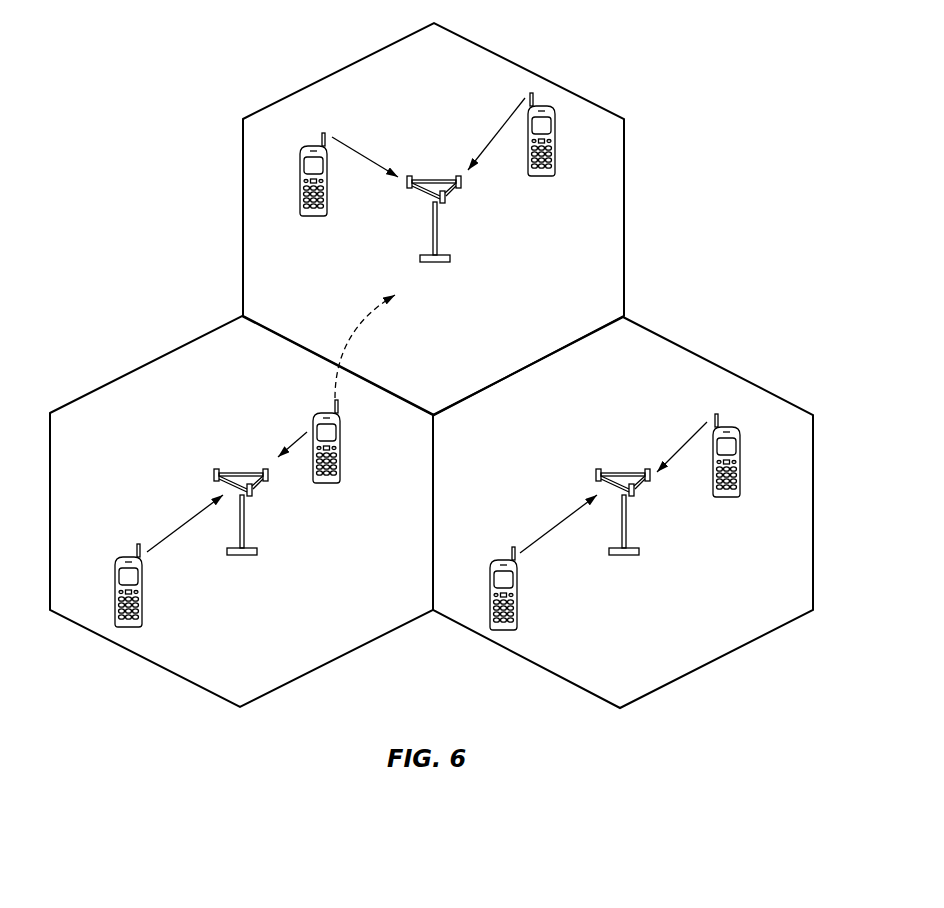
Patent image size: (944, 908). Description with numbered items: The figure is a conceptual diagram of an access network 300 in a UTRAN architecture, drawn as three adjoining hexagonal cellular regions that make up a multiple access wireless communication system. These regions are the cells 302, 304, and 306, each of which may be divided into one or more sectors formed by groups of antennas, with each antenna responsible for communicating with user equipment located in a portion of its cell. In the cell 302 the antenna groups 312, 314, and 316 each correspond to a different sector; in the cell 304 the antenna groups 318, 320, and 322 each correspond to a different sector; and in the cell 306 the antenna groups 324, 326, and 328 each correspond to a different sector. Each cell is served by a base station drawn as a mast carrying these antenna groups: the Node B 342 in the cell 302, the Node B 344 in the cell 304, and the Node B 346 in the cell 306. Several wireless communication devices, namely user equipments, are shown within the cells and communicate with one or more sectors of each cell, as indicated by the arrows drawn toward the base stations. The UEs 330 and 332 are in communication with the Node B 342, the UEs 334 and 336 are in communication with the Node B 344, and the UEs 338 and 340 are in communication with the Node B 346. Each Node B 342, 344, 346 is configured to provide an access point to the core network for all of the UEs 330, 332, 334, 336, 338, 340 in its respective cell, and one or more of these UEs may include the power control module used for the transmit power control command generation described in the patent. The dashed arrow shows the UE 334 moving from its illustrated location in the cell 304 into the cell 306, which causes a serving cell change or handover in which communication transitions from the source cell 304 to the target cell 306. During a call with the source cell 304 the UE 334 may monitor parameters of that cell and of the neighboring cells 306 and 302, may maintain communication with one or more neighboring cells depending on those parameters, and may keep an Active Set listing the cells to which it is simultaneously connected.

The access network 300 is at (731, 52).
The cell 302 is at (717, 363).
The cell 304 is at (125, 375).
The cell 306 is at (512, 64).
The antenna group 312 is at (571, 463).
The antenna group 314 is at (658, 505).
The antenna group 316 is at (673, 486).
The antenna group 318 is at (277, 506).
The antenna group 320 is at (292, 486).
The antenna group 322 is at (190, 462).
The antenna group 324 is at (382, 196).
The antenna group 326 is at (468, 213).
The antenna group 328 is at (484, 193).
The UE 330 is at (739, 448).
The UE 332 is at (492, 582).
The UE 334 is at (340, 437).
The UE 336 is at (116, 578).
The UE 338 is at (312, 217).
The UE 340 is at (547, 173).
The Node B 342 is at (622, 493).
The Node B 344 is at (242, 492).
The Node B 346 is at (432, 200).